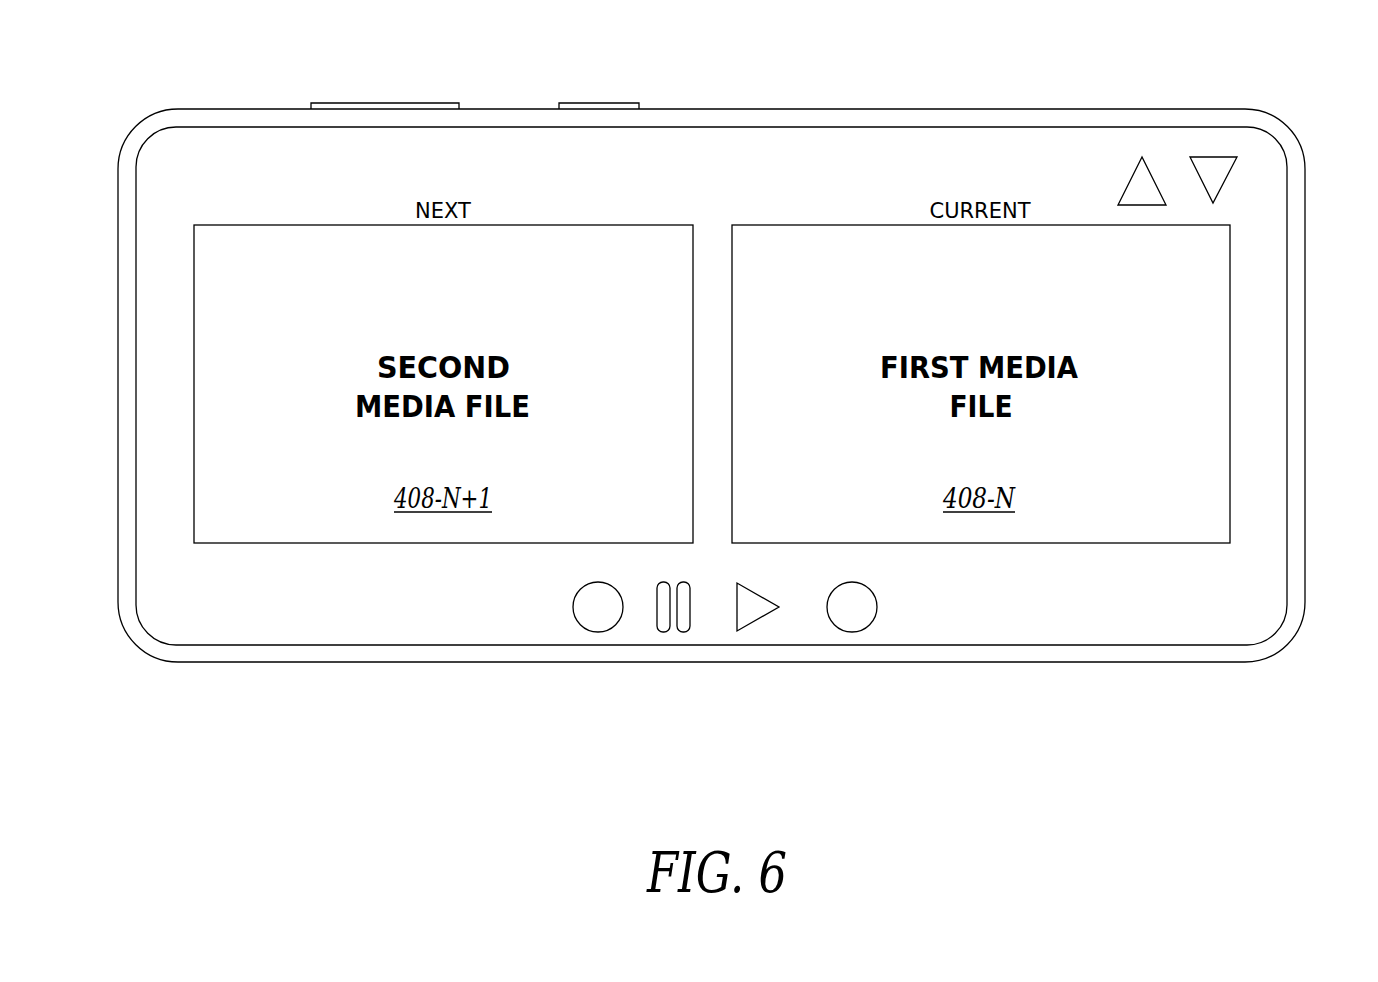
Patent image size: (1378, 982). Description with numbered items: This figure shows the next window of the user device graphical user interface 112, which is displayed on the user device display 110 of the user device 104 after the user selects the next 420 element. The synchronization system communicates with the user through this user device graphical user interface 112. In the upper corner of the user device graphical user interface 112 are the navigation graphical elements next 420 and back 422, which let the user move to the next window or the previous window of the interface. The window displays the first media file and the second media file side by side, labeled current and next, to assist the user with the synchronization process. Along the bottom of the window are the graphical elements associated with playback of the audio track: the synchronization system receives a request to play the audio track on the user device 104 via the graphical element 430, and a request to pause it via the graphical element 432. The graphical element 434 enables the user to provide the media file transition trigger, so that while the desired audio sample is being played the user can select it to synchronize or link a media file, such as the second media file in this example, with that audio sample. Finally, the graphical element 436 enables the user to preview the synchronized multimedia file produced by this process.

The user device 104 is at (186, 107).
The user device display 110 is at (1010, 127).
The user device graphical user interface 112 is at (1263, 177).
The next 420 is at (1232, 168).
The back 422 is at (1122, 188).
The graphical element 430 is at (760, 617).
The graphical element 432 is at (692, 612).
The graphical element 434 is at (872, 626).
The graphical element 436 is at (617, 623).